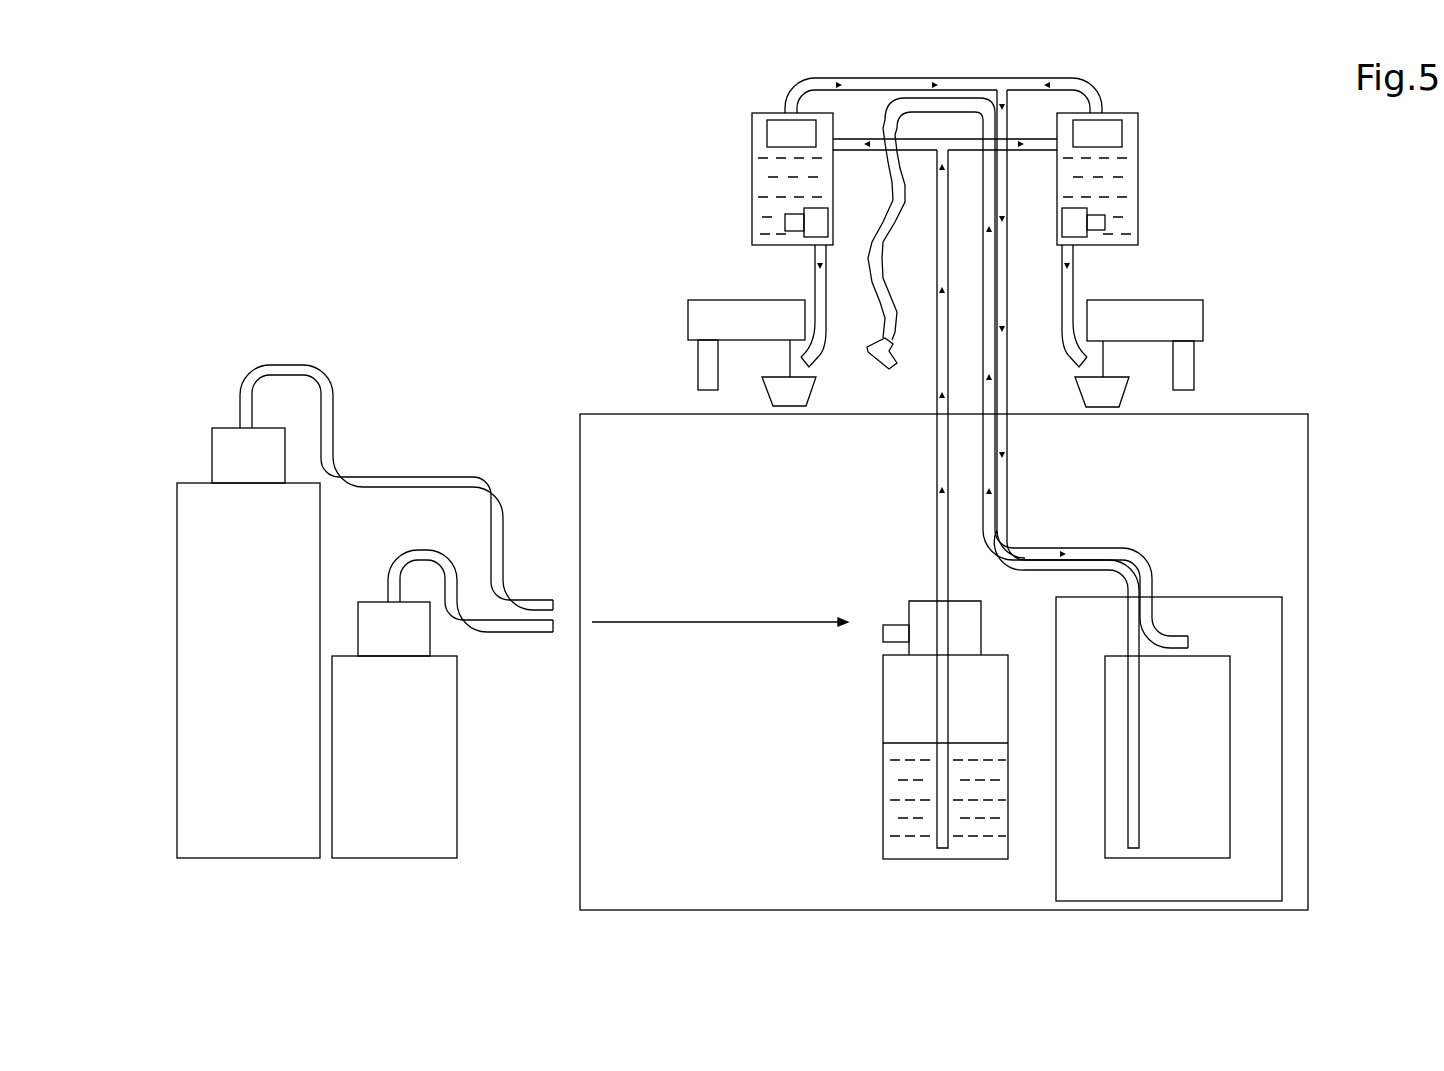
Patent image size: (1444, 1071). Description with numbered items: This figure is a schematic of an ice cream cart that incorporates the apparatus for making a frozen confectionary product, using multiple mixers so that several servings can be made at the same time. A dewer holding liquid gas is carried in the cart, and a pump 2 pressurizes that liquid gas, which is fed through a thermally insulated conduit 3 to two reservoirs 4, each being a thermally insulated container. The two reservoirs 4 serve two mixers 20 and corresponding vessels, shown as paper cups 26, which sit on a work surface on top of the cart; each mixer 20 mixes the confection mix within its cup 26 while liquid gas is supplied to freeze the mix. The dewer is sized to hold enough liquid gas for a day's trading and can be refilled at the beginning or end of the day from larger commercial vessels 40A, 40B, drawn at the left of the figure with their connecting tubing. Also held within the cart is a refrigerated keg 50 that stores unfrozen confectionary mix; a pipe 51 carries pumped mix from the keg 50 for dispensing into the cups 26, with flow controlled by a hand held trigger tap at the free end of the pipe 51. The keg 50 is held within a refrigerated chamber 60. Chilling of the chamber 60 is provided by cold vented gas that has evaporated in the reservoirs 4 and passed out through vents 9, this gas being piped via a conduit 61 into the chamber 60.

The pump 2 is at (909, 610).
The conduit 3 is at (937, 490).
The reservoir 4 is at (752, 170).
The vent 9 is at (783, 112).
The mixer 20 is at (688, 310).
The paper cup 26 is at (770, 401).
The commercial vessel 40A is at (177, 673).
The commercial vessel 40B is at (458, 706).
The keg 50 is at (1230, 813).
The pipe 51 is at (1139, 760).
The refrigerated chamber 60 is at (1308, 695).
The conduit 61 is at (1010, 453).